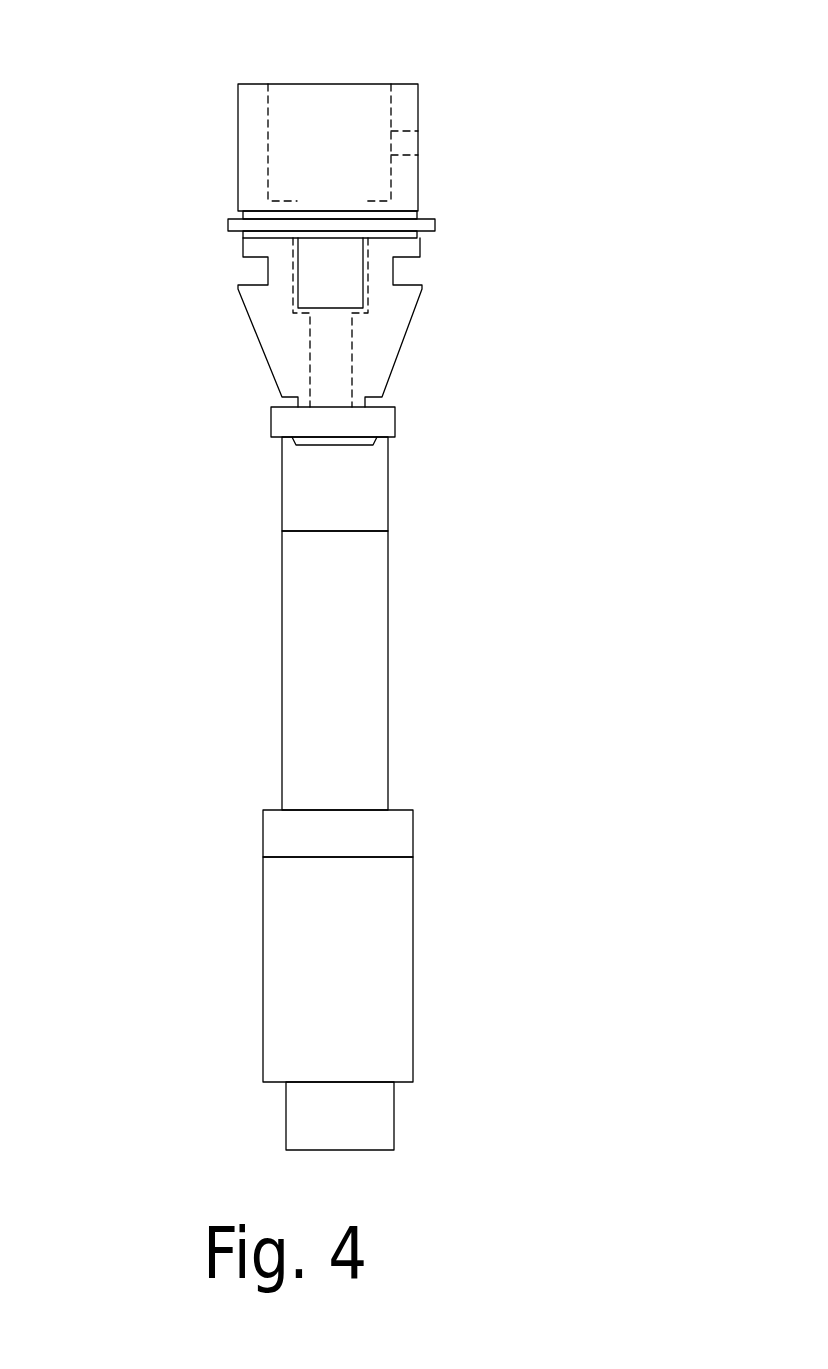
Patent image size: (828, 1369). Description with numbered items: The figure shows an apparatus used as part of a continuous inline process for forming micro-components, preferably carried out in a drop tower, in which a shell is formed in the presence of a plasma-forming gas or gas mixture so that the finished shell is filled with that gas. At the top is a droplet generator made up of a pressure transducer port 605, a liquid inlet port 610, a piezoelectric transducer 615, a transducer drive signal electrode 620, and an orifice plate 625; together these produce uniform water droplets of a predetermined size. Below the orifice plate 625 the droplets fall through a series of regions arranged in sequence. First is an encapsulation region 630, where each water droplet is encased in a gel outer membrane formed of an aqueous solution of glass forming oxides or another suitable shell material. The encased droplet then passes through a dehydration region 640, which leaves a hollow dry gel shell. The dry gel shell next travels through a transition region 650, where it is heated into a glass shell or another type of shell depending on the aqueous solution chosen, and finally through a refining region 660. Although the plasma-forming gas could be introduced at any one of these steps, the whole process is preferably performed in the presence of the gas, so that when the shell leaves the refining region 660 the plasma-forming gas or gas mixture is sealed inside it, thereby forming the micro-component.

The pressure transducer port 605 is at (310, 84).
The liquid inlet port 610 is at (412, 142).
The piezoelectric transducer 615 is at (413, 212).
The transducer drive signal electrode 620 is at (228, 225).
The orifice plate 625 is at (312, 440).
The encapsulation region 630 is at (388, 437).
The dehydration region 640 is at (388, 530).
The transition region 650 is at (413, 810).
The refining region 660 is at (413, 857).